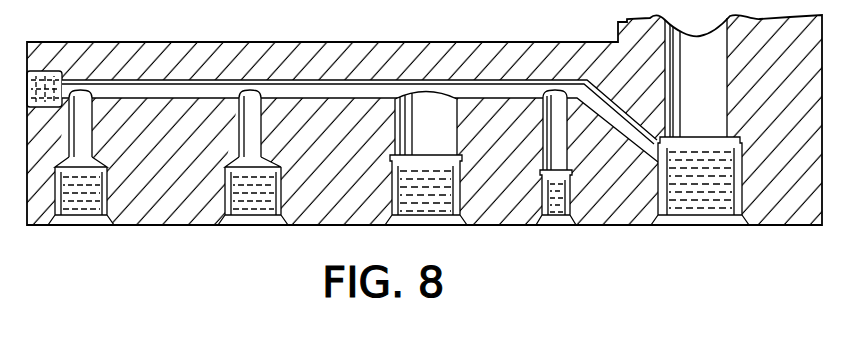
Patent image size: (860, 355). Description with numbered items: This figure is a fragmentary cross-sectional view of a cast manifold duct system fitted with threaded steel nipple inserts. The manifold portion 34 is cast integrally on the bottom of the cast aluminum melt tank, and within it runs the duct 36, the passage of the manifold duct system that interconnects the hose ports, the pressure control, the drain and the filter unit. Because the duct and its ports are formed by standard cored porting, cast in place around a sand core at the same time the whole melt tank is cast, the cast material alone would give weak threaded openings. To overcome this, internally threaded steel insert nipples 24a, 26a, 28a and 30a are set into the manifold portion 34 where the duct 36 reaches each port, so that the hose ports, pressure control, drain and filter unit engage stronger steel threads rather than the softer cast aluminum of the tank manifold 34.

The internally threaded steel insert nipple 24a is at (250, 212).
The internally threaded steel insert nipple 26a is at (417, 212).
The internally threaded steel insert nipple 28a is at (550, 212).
The internally threaded steel insert nipple 30a is at (693, 213).
The manifold portion 34 is at (782, 226).
The duct 36 is at (282, 88).